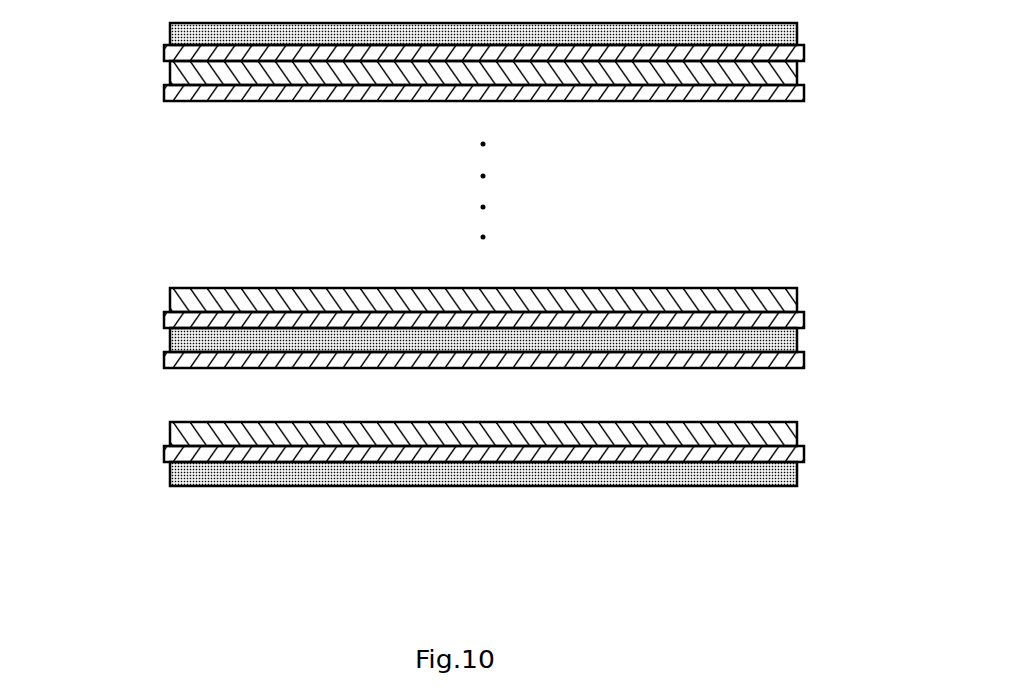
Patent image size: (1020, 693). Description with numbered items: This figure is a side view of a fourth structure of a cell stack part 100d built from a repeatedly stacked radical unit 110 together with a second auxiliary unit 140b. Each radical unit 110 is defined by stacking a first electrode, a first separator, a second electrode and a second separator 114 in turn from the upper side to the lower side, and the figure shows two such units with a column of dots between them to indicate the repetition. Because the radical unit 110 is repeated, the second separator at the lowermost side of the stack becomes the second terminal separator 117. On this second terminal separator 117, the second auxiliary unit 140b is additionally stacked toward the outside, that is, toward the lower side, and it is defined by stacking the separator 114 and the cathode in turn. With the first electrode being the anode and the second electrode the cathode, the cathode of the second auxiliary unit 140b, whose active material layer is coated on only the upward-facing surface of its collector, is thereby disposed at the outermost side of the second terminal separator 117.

The cell stack part 100d is at (815, 30).
The radical unit 110 is at (82, 28).
The second separator 114 is at (438, 241).
The second terminal separator 117 is at (438, 375).
The second auxiliary unit 140b is at (82, 425).